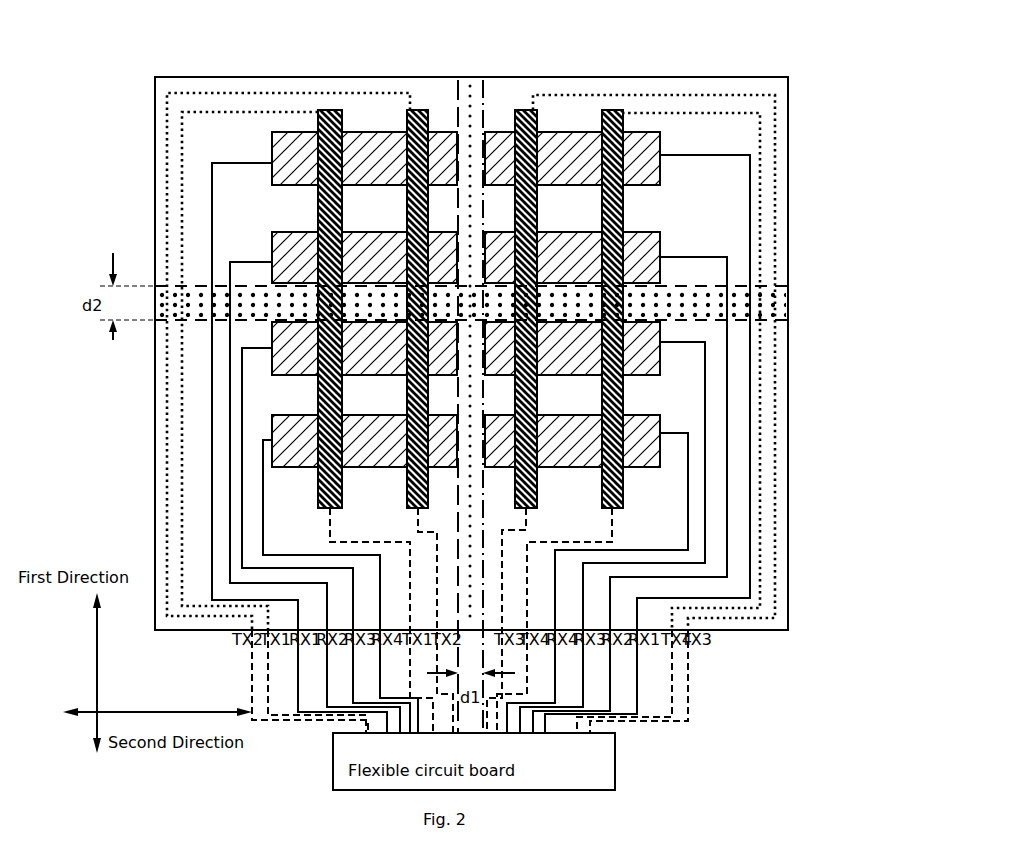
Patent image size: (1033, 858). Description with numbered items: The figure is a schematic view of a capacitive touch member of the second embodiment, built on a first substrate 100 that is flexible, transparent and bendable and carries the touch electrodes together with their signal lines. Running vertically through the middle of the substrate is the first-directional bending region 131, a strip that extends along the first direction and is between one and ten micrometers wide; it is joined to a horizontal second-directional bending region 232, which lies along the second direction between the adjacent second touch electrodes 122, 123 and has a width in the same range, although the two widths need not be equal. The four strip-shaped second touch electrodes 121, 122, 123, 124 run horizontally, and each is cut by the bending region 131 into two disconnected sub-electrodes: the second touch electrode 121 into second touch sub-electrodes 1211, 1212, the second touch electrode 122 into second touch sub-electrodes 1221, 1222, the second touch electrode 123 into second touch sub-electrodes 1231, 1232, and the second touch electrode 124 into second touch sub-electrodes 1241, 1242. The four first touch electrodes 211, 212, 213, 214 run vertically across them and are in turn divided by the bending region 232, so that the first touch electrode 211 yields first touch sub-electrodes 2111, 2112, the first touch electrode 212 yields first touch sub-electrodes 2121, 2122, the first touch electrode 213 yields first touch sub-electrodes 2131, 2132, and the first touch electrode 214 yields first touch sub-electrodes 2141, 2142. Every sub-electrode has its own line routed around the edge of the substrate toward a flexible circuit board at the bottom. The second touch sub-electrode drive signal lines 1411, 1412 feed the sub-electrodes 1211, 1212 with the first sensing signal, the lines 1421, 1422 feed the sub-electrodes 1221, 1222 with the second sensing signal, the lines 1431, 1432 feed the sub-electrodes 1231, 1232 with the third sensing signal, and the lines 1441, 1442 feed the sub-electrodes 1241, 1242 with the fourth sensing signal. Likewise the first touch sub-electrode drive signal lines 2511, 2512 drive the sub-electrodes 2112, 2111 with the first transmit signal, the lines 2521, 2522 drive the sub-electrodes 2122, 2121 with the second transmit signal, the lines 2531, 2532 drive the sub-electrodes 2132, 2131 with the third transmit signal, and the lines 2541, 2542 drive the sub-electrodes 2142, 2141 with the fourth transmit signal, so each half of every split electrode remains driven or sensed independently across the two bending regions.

The first substrate 100 is at (703, 77).
The second touch electrode 121 is at (473, 147).
The second touch electrode 122 is at (472, 245).
The second touch electrode 123 is at (475, 367).
The second touch electrode 124 is at (476, 459).
The second touch sub-electrode 1211 is at (272, 140).
The second touch sub-electrode 1212 is at (660, 143).
The second touch sub-electrode 1221 is at (272, 243).
The second touch sub-electrode 1222 is at (660, 245).
The second touch sub-electrode 1231 is at (272, 377).
The second touch sub-electrode 1232 is at (660, 377).
The second touch sub-electrode 1241 is at (284, 468).
The second touch sub-electrode 1242 is at (662, 466).
The first-directional bending region 131 is at (470, 92).
The second-directional bending region 232 is at (782, 304).
The first touch electrode 211 is at (314, 287).
The first touch electrode 212 is at (406, 281).
The first touch electrode 213 is at (550, 276).
The first touch electrode 214 is at (639, 281).
The first touch sub-electrode 2111 is at (330, 110).
The first touch sub-electrode 2112 is at (320, 504).
The first touch sub-electrode 2121 is at (415, 110).
The first touch sub-electrode 2122 is at (408, 500).
The first touch sub-electrode 2131 is at (522, 110).
The first touch sub-electrode 2132 is at (538, 499).
The first touch sub-electrode 2141 is at (611, 110).
The first touch sub-electrode 2142 is at (624, 506).
The second touch sub-electrode drive signal line 1411 is at (212, 228).
The second touch sub-electrode drive signal line 1412 is at (750, 230).
The second touch sub-electrode drive signal line 1421 is at (230, 271).
The second touch sub-electrode drive signal line 1422 is at (727, 270).
The second touch sub-electrode drive signal line 1431 is at (242, 371).
The second touch sub-electrode drive signal line 1432 is at (705, 365).
The second touch sub-electrode drive signal line 1441 is at (263, 466).
The second touch sub-electrode drive signal line 1442 is at (688, 470).
The first touch sub-electrode drive signal line 2511 is at (330, 540).
The first touch sub-electrode drive signal line 2512 is at (167, 495).
The first touch sub-electrode drive signal line 2521 is at (418, 526).
The first touch sub-electrode drive signal line 2522 is at (182, 522).
The first touch sub-electrode drive signal line 2531 is at (527, 520).
The first touch sub-electrode drive signal line 2532 is at (775, 508).
The first touch sub-electrode drive signal line 2541 is at (612, 527).
The first touch sub-electrode drive signal line 2542 is at (760, 542).